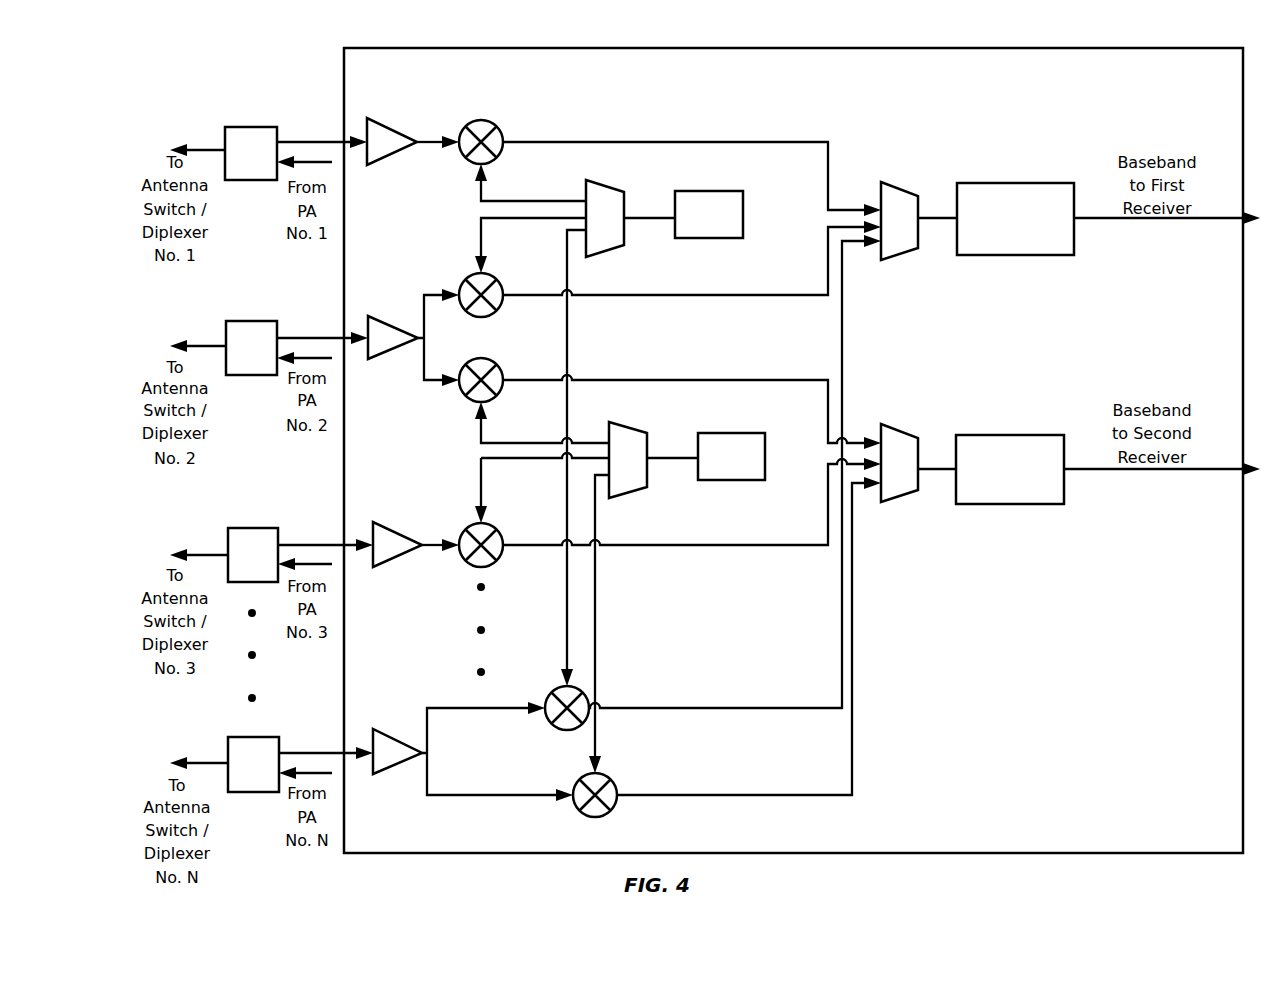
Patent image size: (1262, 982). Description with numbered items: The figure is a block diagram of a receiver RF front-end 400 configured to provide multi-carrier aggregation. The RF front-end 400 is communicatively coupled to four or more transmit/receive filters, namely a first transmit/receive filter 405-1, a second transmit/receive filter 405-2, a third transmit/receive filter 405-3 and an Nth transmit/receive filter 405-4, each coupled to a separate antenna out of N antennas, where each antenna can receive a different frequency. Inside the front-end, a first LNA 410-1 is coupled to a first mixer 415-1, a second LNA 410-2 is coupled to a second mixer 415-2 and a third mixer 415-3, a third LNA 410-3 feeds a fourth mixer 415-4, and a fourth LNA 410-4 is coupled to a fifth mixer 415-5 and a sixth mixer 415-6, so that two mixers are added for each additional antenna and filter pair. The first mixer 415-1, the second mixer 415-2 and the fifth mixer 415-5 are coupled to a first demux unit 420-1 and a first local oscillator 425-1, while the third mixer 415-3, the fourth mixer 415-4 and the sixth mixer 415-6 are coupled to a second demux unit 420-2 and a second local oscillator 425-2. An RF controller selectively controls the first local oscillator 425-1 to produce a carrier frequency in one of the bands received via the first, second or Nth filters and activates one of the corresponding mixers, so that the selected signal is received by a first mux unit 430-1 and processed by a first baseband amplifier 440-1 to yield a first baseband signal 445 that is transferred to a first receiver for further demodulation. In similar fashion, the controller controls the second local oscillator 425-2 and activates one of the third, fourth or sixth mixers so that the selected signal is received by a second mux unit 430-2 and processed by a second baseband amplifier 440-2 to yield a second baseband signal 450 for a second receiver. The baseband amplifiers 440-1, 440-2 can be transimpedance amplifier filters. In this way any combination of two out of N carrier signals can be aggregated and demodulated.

The receiver RF front-end 400 is at (332, 94).
The first transmit/receive filter 405-1 is at (250, 127).
The second transmit/receive filter 405-2 is at (252, 321).
The third transmit/receive filter 405-3 is at (252, 528).
The Nth transmit/receive filter 405-4 is at (248, 737).
The first LNA 410-1 is at (403, 135).
The second LNA 410-2 is at (408, 333).
The third LNA 410-3 is at (405, 537).
The fourth LNA 410-4 is at (405, 744).
The first mixer 415-1 is at (474, 121).
The second mixer 415-2 is at (466, 278).
The third mixer 415-3 is at (467, 397).
The fourth mixer 415-4 is at (468, 561).
The fifth mixer 415-5 is at (553, 726).
The sixth mixer 415-6 is at (612, 768).
The first demux unit 420-1 is at (605, 186).
The second demux unit 420-2 is at (628, 429).
The first local oscillator 425-1 is at (708, 191).
The second local oscillator 425-2 is at (735, 433).
The first mux unit 430-1 is at (900, 183).
The second mux unit 430-2 is at (900, 425).
The first baseband amplifier 440-1 is at (1015, 183).
The second baseband amplifier 440-2 is at (1012, 435).
The first baseband signal 445 is at (1147, 220).
The second baseband signal 450 is at (1140, 471).